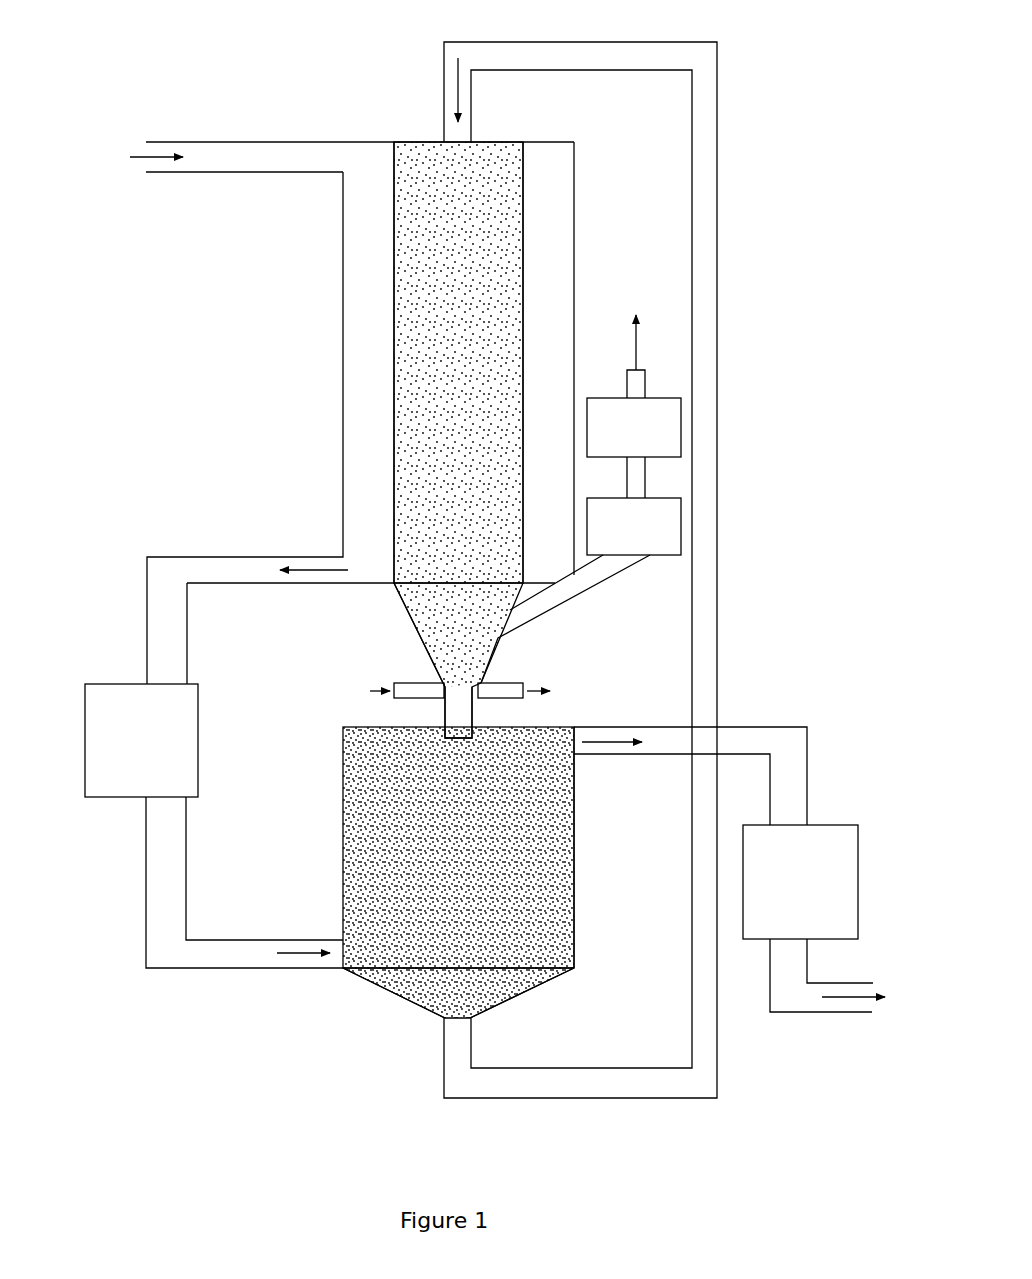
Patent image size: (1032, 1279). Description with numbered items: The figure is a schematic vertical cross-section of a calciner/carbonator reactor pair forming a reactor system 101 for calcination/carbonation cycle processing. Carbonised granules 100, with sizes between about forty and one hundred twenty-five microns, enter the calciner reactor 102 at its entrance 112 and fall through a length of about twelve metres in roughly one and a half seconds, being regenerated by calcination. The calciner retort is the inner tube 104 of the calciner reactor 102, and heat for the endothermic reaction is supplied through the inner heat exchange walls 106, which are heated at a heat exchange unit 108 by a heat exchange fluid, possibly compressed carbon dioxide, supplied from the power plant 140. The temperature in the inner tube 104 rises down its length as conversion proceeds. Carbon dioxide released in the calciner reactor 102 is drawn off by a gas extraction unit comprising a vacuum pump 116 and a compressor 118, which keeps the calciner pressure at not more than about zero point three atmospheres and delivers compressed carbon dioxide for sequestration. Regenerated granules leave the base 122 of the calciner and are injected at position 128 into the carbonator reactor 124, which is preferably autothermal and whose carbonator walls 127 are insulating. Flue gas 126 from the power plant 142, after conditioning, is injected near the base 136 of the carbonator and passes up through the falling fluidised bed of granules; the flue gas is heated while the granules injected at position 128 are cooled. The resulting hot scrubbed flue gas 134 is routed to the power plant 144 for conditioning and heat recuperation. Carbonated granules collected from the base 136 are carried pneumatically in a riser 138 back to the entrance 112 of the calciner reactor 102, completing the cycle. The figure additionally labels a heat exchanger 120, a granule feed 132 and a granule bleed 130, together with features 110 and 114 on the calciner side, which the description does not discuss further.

The carbonised granules 100 is at (563, 64).
The reactor system 101 is at (185, 1077).
The calciner reactor 102 is at (458, 414).
The inner tube 104 is at (525, 275).
The inner heat exchange walls 106 is at (393, 445).
The heat exchange unit 108 is at (185, 154).
The hot flue gas passage 110 is at (378, 270).
The entrance 112 is at (430, 132).
The calciner cone section 114 is at (405, 663).
The vacuum pump 116 is at (634, 526).
The compressor 118 is at (634, 434).
The heat exchanger 120 is at (415, 638).
The base of the calciner 122 is at (515, 650).
The carbonator reactor 124 is at (458, 872).
The flue gas 126 is at (244, 905).
The carbonator walls 127 is at (578, 882).
The injection position 128 is at (478, 713).
The granule bleed 130 is at (558, 697).
The granule feed 132 is at (363, 697).
The hot scrubbed flue gas 134 is at (690, 776).
The base of the carbonator 136 is at (428, 1020).
The riser 138 is at (722, 152).
The power plant 140 is at (141, 740).
The power plant 142 is at (657, 355).
The power plant 144 is at (832, 941).